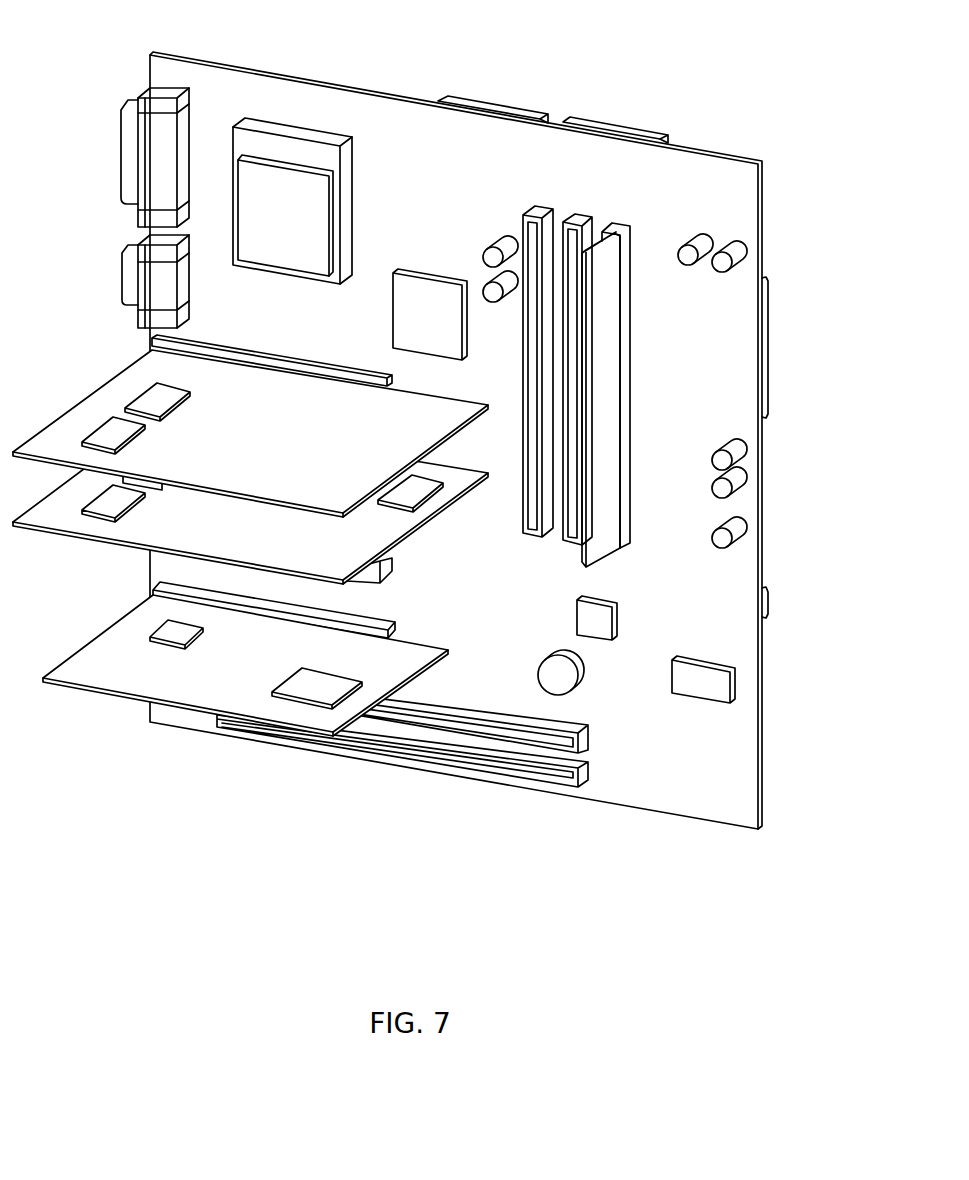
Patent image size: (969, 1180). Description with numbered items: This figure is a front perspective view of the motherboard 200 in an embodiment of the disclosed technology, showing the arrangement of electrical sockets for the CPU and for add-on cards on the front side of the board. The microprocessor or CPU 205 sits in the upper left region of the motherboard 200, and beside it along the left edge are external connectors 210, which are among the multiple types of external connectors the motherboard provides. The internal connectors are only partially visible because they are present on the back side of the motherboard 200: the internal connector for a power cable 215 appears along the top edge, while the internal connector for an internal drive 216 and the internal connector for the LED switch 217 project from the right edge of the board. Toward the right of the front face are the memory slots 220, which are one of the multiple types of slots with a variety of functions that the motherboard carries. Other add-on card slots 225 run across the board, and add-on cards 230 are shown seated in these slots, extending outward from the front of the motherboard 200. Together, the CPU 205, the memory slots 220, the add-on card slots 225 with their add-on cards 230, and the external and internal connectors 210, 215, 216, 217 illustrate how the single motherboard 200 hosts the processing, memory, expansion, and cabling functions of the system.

The motherboard 200 is at (226, 85).
The microprocessor or CPU 205 is at (306, 138).
The external connector 210 is at (121, 127).
The internal connector for a power cable 215 is at (517, 110).
The internal connector for an internal drive 216 is at (768, 328).
The internal connector for the LED switch 217 is at (768, 605).
The memory slots 220 is at (624, 362).
The add-on card slots 225 is at (185, 343).
The add-on cards 230 is at (148, 368).